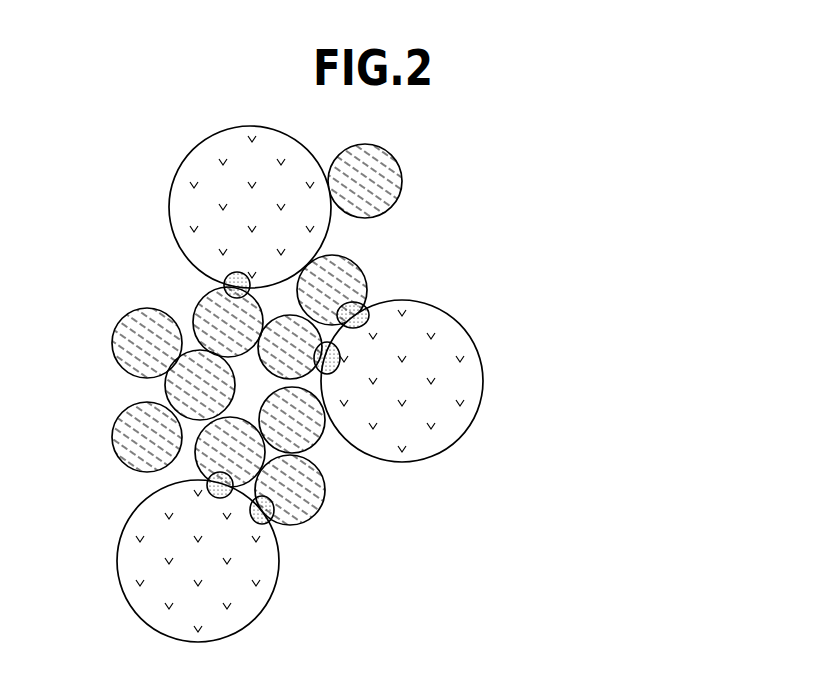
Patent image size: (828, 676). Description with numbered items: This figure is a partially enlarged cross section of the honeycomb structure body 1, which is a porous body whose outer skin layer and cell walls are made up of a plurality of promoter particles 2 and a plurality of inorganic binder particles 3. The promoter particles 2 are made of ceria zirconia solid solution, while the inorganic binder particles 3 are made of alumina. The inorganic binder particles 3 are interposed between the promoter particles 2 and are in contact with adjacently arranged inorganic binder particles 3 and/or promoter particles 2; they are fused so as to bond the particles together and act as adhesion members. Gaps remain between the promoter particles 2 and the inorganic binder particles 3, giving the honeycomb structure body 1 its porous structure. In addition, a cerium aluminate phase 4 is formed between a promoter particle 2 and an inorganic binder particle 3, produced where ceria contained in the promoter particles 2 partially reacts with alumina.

The honeycomb structure body 1 is at (473, 178).
The promoter particles 2 is at (207, 143).
The inorganic binder particles 3 is at (303, 503).
The cerium aluminate phase 4 is at (367, 322).